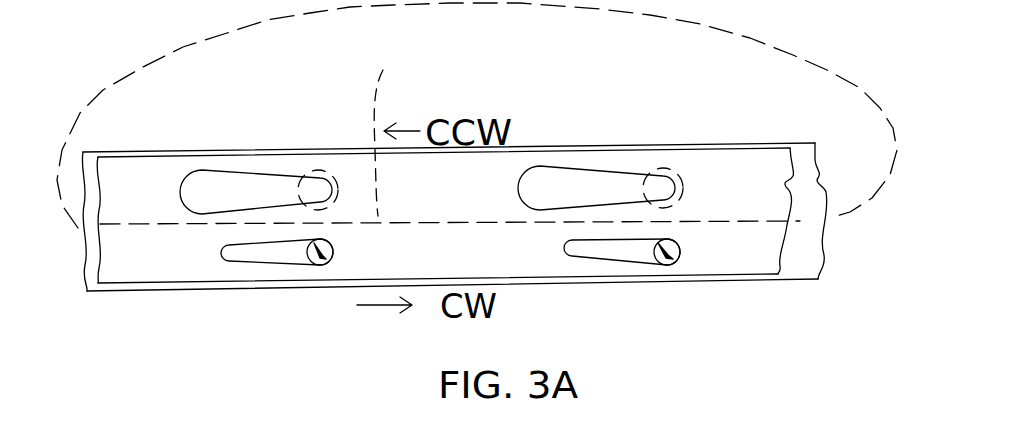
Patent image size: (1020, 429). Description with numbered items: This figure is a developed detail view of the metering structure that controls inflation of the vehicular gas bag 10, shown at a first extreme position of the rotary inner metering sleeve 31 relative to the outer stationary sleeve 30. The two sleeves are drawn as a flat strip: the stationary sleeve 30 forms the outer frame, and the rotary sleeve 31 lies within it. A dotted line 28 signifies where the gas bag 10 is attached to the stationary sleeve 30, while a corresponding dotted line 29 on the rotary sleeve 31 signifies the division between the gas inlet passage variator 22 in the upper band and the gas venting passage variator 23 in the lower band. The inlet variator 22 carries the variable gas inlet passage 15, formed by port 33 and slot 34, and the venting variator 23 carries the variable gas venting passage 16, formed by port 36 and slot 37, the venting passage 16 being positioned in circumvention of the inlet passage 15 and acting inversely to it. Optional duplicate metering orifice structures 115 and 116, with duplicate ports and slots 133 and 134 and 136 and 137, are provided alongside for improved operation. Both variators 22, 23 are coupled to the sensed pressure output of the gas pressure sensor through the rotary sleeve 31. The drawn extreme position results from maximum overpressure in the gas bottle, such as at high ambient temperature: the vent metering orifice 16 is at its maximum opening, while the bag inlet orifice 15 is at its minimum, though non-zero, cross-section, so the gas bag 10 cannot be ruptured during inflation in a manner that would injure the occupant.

The gas bag 10 is at (482, 49).
The variable gas inlet passage 15 is at (310, 190).
The variable gas venting passage 16 is at (323, 265).
The gas inlet passage variator 22 is at (466, 204).
The gas venting passage variator 23 is at (468, 272).
The dotted line 28 is at (803, 222).
The dotted line 29 is at (404, 136).
The stationary sleeve 30 is at (802, 178).
The rotary sleeve 31 is at (723, 180).
The port 33 is at (293, 193).
The slot 34 is at (213, 192).
The port 36 is at (303, 255).
The slot 37 is at (248, 253).
The duplicate metering orifice structure 115 is at (659, 190).
The duplicate metering orifice structure 116 is at (678, 260).
The duplicate port 133 is at (647, 190).
The duplicate slot 134 is at (550, 195).
The duplicate port 136 is at (650, 255).
The duplicate slot 137 is at (602, 250).